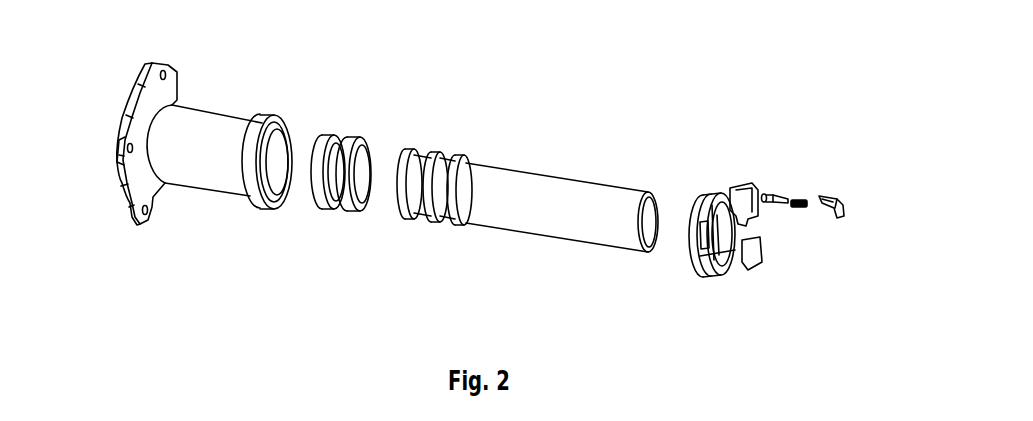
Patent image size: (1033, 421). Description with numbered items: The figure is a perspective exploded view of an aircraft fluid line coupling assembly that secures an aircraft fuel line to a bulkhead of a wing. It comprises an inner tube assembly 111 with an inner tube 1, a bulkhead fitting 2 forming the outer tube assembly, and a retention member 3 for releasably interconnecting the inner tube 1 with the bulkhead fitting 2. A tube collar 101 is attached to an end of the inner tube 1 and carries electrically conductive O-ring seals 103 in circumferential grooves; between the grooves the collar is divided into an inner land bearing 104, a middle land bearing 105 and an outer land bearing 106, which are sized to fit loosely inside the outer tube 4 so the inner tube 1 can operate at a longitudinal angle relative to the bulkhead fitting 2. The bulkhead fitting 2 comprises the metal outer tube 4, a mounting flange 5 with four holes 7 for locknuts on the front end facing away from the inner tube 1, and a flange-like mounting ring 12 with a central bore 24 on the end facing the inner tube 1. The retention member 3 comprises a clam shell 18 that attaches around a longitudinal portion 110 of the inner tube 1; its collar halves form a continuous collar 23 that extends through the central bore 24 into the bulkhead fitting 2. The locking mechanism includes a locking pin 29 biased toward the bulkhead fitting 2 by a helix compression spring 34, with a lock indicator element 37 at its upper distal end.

The inner tube 1 is at (502, 204).
The bulkhead fitting 2 is at (200, 164).
The retention member 3 is at (791, 216).
The outer tube 4 is at (201, 185).
The mounting flange 5 is at (135, 104).
The holes 7 is at (127, 163).
The mounting ring 12 is at (258, 205).
The clam shell 18 is at (696, 225).
The collar 23 is at (686, 256).
The central bore 24 is at (259, 193).
The locking pin 29 is at (769, 204).
The helix compression spring 34 is at (795, 208).
The lock indicator element 37 is at (837, 214).
The tube collar 101 is at (425, 192).
The O-ring seals 103 is at (336, 135).
The inner land bearing 104 is at (397, 220).
The middle land bearing 105 is at (423, 222).
The outer land bearing 106 is at (453, 222).
The longitudinal portion 110 is at (541, 166).
The inner tube assembly 111 is at (606, 176).